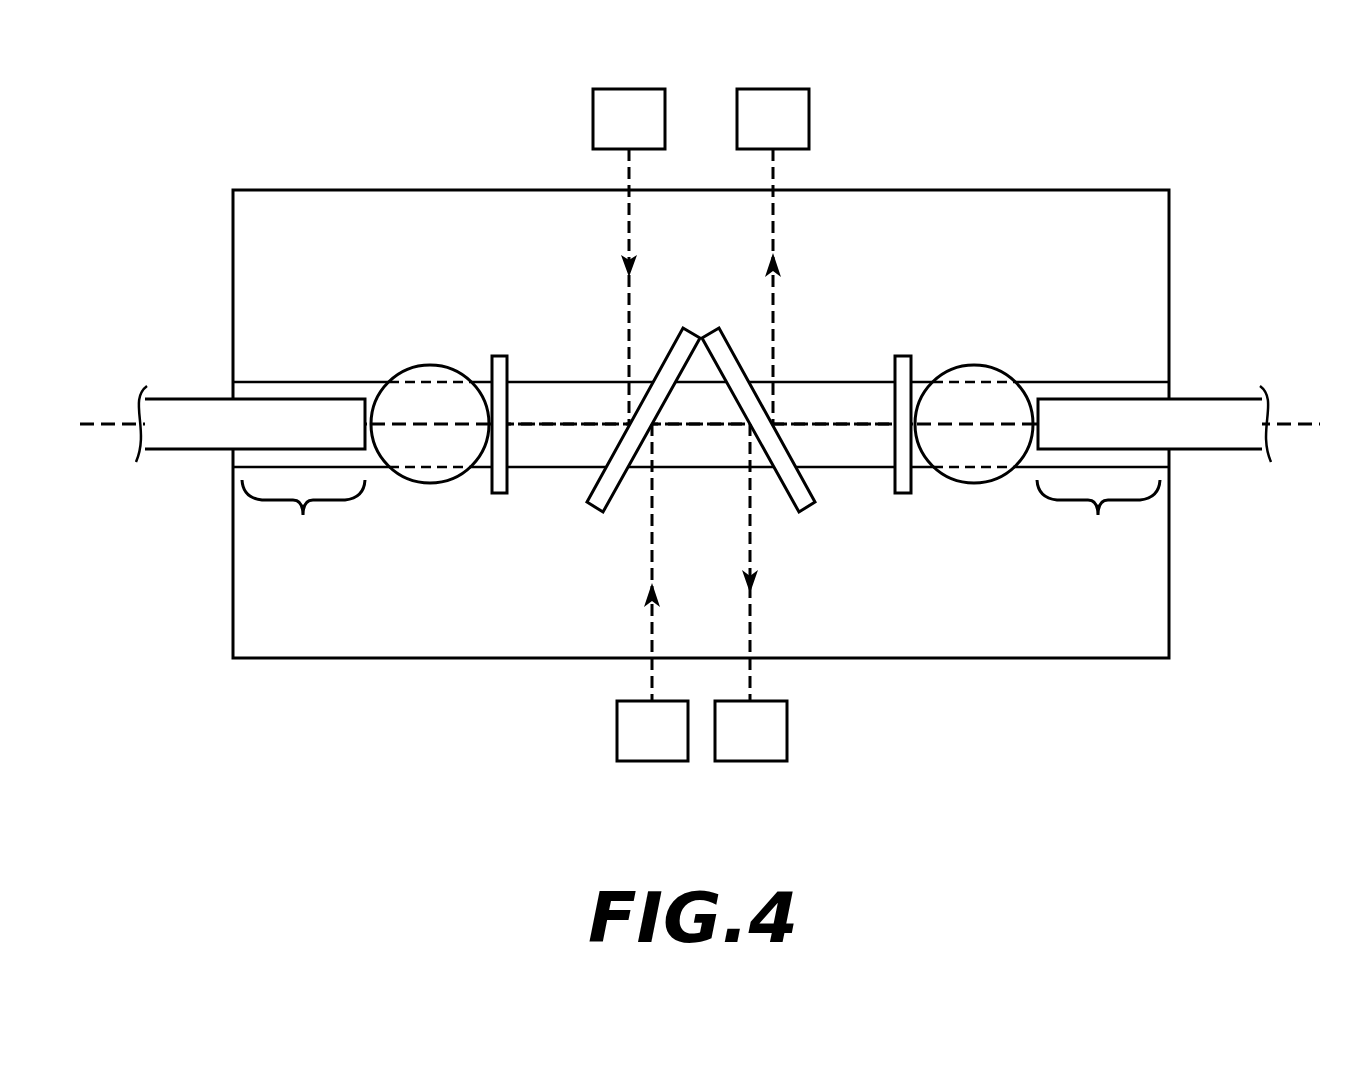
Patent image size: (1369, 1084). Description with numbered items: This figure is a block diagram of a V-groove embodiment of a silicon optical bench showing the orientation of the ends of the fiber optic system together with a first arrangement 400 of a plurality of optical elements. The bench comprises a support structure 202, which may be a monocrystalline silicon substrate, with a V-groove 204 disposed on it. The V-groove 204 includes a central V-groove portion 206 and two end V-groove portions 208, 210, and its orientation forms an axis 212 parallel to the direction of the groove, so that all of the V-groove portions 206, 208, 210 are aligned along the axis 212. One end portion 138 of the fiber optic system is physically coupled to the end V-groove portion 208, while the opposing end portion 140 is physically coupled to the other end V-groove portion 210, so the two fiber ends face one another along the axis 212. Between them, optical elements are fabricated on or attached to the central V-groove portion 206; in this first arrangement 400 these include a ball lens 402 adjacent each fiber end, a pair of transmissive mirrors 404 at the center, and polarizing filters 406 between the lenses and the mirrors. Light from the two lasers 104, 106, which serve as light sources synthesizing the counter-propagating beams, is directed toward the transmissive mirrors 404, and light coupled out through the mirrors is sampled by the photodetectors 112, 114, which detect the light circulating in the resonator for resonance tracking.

The first arrangement 400 is at (1098, 144).
The support structure 202 is at (305, 189).
The V-groove 204 is at (322, 382).
The central V-groove portion 206 is at (358, 577).
The end V-groove portion 208 is at (303, 517).
The end V-groove portion 210 is at (1098, 517).
The axis 212 is at (112, 430).
The end portion 138 is at (193, 398).
The end portion 140 is at (1202, 398).
The ball lens 402 is at (410, 366).
The transmissive mirror 404 is at (701, 302).
The polarizing filter 406 is at (500, 355).
The laser 104 is at (606, 133).
The laser 106 is at (629, 745).
The photodetector 112 is at (728, 745).
The photodetector 114 is at (750, 133).